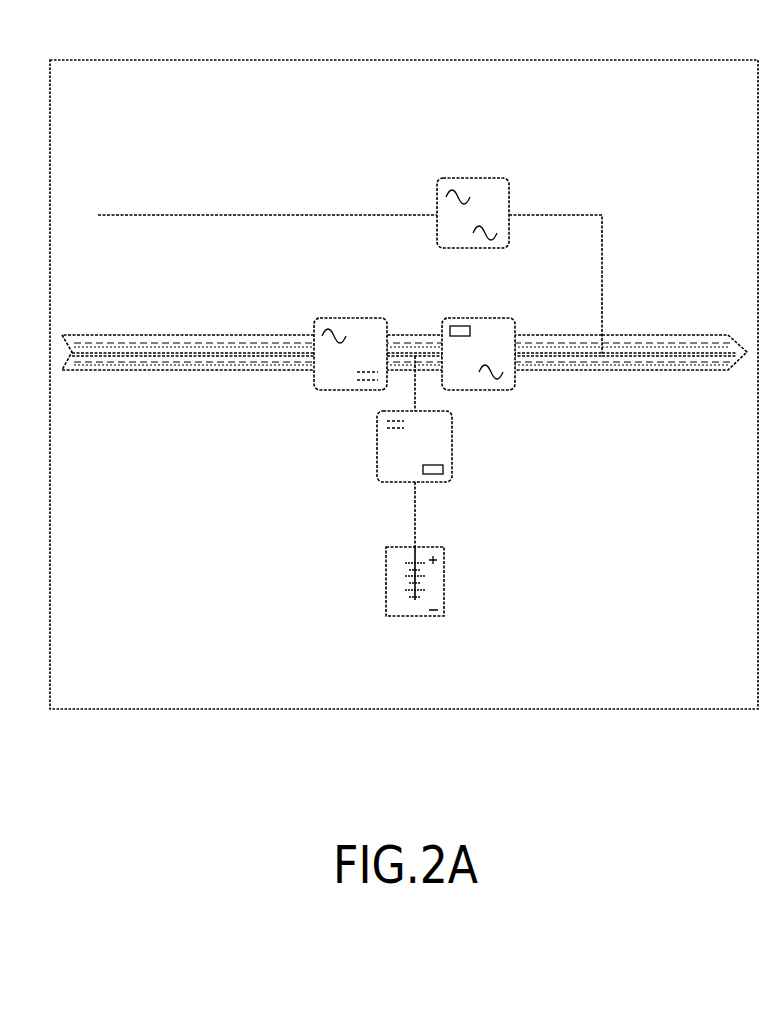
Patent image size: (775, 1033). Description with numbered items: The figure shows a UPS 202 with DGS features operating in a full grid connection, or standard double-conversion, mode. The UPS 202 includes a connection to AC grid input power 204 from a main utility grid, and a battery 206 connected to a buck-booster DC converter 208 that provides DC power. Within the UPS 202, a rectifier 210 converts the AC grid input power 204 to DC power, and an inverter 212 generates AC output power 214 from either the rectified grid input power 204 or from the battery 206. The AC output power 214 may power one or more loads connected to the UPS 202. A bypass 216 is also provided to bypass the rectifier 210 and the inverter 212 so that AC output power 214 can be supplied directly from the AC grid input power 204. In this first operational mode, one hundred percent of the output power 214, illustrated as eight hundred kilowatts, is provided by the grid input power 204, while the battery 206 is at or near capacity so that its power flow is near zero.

The UPS 202 is at (136, 60).
The AC grid input power 204 is at (198, 352).
The battery 206 is at (386, 580).
The buck-booster DC converter 208 is at (452, 475).
The rectifier 210 is at (312, 382).
The inverter 212 is at (517, 382).
The AC output power 214 is at (620, 352).
The bypass 216 is at (437, 203).